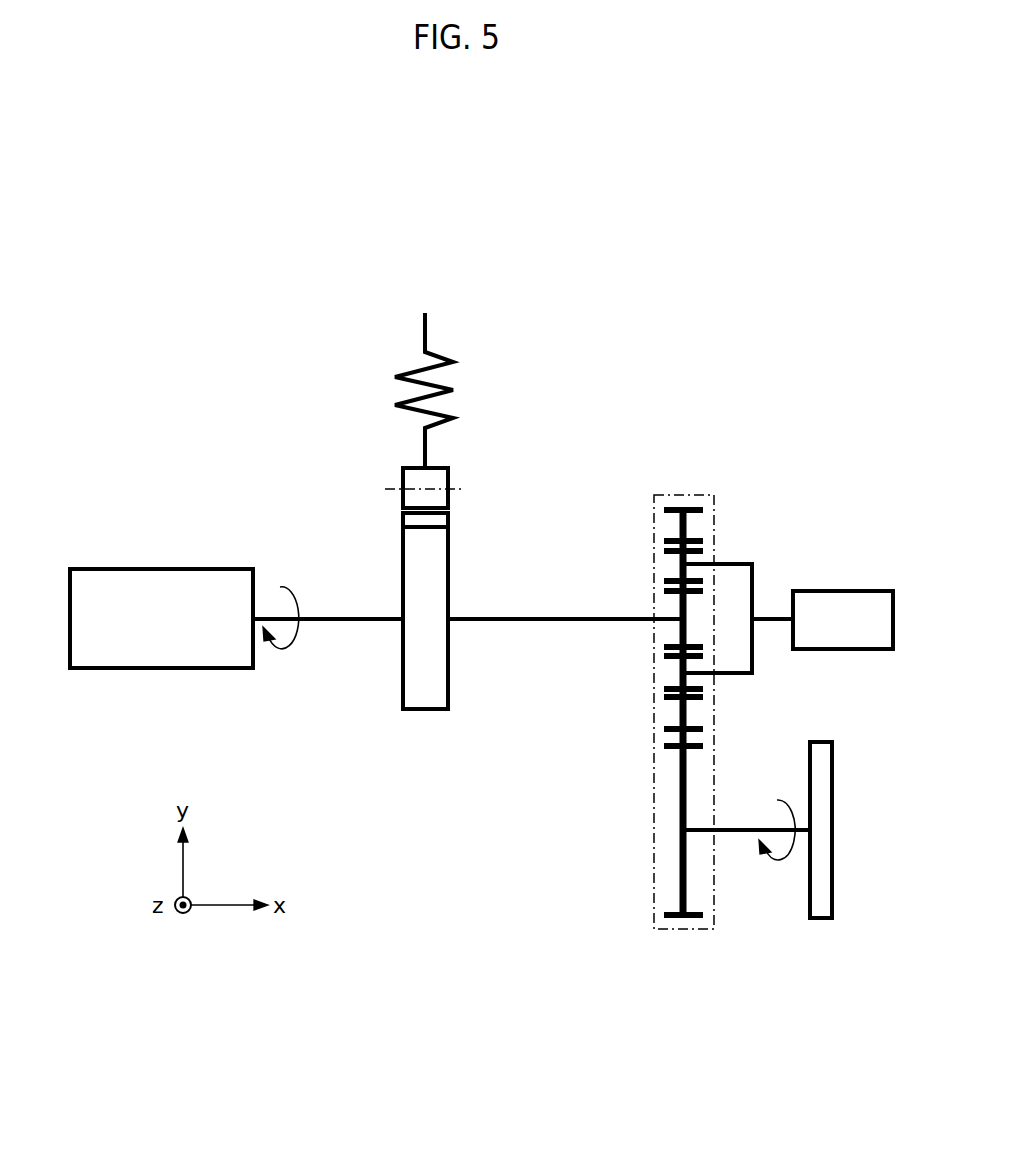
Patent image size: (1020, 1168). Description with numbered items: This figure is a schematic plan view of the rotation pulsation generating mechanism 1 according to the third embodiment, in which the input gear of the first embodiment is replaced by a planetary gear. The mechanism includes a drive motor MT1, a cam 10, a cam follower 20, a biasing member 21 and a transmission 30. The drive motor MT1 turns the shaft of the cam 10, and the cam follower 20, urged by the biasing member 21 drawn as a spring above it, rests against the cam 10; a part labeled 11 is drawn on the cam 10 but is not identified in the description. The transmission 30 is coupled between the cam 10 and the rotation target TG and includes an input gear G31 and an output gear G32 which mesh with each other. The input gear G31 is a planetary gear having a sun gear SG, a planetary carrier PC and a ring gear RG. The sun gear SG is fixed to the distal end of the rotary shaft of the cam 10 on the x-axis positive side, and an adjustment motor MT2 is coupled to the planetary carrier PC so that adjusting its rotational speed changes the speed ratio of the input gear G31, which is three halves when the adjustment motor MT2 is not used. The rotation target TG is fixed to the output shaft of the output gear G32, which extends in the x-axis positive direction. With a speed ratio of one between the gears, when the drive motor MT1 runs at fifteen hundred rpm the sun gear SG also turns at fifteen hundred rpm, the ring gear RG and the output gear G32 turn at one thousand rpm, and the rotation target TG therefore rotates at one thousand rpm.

The rotation pulsation generating mechanism 1 is at (630, 452).
The cam 10 is at (462, 609).
The friction plate 11 is at (448, 522).
The cam follower 20 is at (441, 479).
The biasing member 21 is at (443, 385).
The transmission 30 is at (674, 706).
The drive motor MT1 is at (161, 618).
The adjustment motor MT2 is at (843, 620).
The sun gear SG is at (683, 632).
The planetary carrier PC is at (683, 672).
The ring gear RG is at (683, 708).
The input gear G31 is at (568, 679).
The output gear G32 is at (683, 862).
The rotation target TG is at (822, 920).